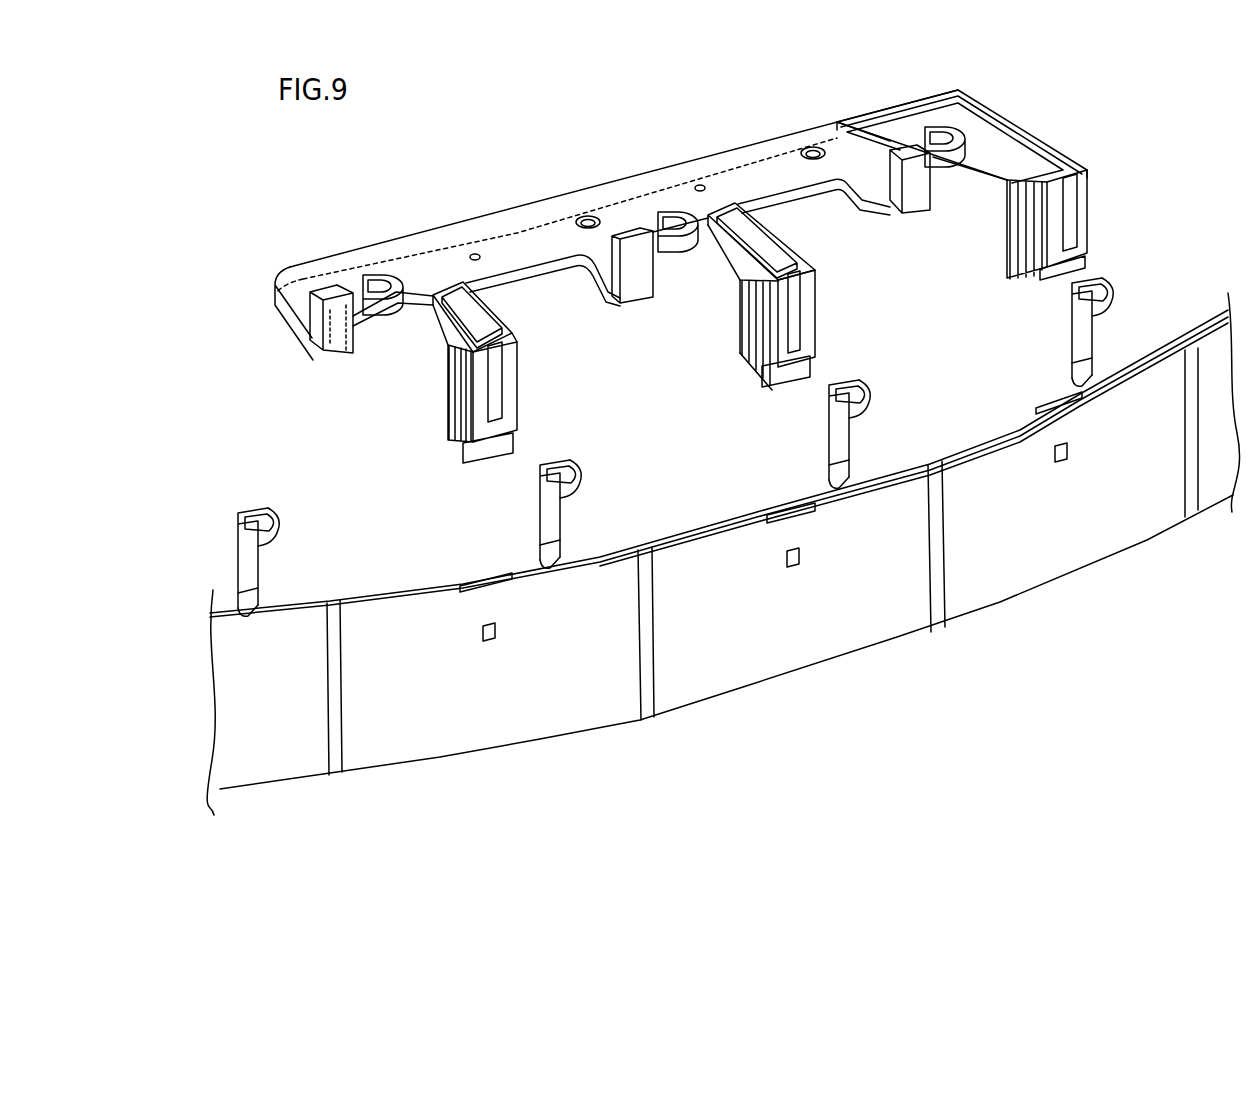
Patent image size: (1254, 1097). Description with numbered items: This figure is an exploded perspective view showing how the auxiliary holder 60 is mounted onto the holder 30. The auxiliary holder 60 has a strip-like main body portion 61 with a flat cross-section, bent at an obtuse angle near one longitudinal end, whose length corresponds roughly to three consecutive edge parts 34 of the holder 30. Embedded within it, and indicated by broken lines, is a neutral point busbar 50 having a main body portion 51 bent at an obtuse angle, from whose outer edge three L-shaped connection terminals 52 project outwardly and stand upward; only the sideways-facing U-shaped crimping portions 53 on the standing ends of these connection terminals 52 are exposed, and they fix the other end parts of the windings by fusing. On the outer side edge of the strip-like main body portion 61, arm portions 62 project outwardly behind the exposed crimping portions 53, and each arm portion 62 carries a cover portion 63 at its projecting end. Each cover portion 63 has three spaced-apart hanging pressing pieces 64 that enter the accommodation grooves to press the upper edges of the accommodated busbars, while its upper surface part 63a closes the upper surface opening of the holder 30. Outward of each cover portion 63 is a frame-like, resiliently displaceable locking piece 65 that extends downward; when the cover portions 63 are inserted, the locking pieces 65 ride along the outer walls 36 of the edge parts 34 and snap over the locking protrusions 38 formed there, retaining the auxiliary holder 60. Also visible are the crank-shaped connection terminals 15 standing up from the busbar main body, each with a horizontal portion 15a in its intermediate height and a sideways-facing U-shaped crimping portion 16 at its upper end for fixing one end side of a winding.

The connection terminal 15 is at (262, 570).
The horizontal portion 15a is at (1080, 366).
The crimping portion 16 is at (278, 512).
The holder 30 is at (1058, 640).
The edge part 34 is at (497, 728).
The outer wall 36 is at (718, 685).
The locking protrusion 38 is at (485, 637).
The neutral point busbar 50 is at (648, 193).
The main body portion 51 is at (515, 235).
The connection terminal 52 is at (305, 343).
The crimping portion 53 is at (380, 283).
The auxiliary holder 60 is at (772, 106).
The strip-like main body portion 61 is at (562, 205).
The arm portion 62 is at (503, 310).
The cover portion 63 is at (518, 340).
The upper surface part 63a is at (750, 277).
The pressing piece 64 is at (463, 443).
The locking piece 65 is at (512, 398).